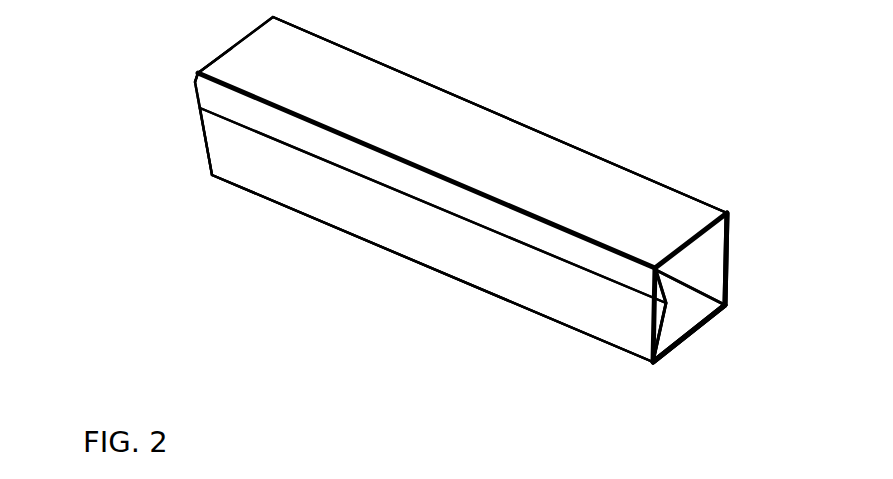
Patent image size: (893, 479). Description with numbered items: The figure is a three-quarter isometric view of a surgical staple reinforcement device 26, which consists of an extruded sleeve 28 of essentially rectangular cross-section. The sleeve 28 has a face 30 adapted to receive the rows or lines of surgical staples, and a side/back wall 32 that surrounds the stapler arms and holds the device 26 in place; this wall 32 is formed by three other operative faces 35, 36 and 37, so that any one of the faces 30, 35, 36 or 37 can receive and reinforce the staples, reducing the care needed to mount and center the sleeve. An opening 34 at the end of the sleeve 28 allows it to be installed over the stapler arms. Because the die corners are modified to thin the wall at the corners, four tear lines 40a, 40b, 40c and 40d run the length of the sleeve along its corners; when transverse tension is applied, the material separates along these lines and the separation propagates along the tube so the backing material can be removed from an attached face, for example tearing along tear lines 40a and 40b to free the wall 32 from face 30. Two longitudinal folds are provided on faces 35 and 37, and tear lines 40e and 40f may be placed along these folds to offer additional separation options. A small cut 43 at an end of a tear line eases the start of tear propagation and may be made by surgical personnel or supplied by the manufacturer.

The staple reinforcement device 26 is at (417, 62).
The sleeve 28 is at (198, 107).
The face 30 is at (628, 200).
The side/back wall 32 is at (726, 228).
The opening 34 is at (715, 322).
The face 35 is at (724, 295).
The face 36 is at (678, 325).
The face 37 is at (463, 257).
The tear line 40a is at (535, 128).
The tear line 40b is at (317, 126).
The tear line 40c is at (332, 230).
The tear line 40d is at (727, 308).
The tear line 40e is at (555, 270).
The tear line 40f is at (697, 262).
The cut 43 is at (197, 73).